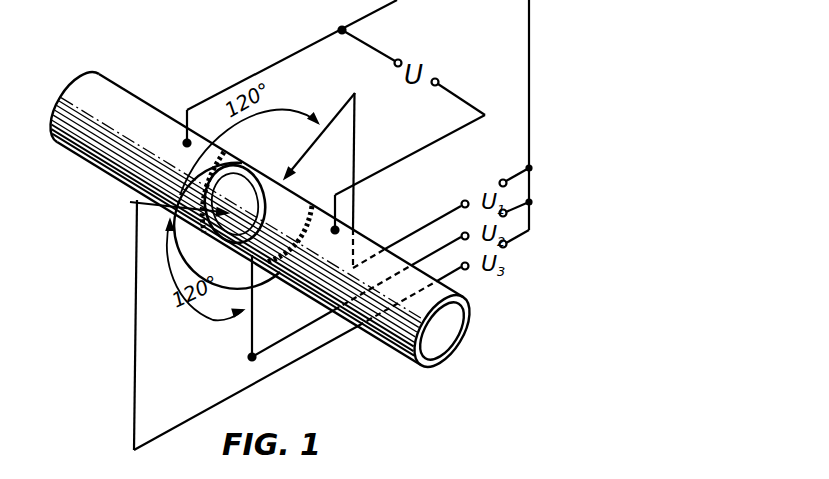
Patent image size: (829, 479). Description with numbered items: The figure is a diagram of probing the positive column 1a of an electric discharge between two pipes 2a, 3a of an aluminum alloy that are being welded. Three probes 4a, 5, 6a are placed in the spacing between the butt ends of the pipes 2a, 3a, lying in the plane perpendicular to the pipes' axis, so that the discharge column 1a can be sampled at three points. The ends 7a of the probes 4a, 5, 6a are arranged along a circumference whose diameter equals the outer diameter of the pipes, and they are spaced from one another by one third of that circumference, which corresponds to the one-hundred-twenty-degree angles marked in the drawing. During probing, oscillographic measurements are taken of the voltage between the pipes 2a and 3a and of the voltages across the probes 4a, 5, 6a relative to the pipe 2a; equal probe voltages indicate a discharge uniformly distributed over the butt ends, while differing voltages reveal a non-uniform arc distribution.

The positive column 1a is at (295, 186).
The pipe 2a is at (93, 150).
The pipe 3a is at (403, 334).
The probe 4a is at (354, 94).
The electrode 5 is at (253, 306).
The probe 6a is at (137, 212).
The ends of the probes 7a is at (243, 258).